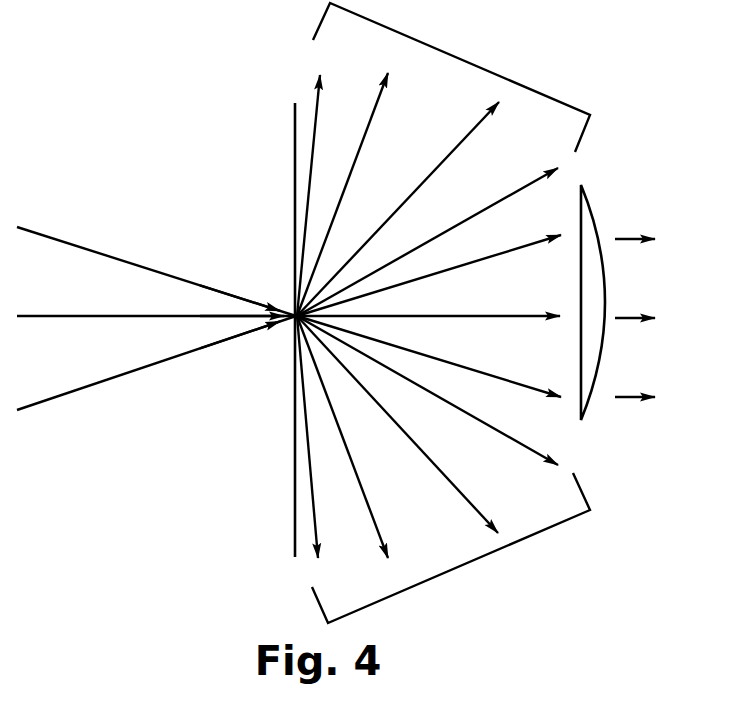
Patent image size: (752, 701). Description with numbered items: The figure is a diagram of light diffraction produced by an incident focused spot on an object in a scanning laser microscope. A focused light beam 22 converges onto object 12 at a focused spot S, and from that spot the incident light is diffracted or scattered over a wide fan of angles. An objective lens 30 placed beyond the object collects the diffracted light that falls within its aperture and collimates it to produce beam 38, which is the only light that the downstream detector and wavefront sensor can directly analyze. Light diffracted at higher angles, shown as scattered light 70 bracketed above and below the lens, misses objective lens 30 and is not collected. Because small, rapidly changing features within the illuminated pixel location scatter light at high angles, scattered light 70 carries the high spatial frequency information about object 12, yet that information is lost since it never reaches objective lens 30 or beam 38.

The object 12 is at (292, 474).
The focused light beam 22 is at (98, 252).
The focused spot S is at (293, 303).
The scattered light 70 is at (455, 57).
The objective lens 30 is at (587, 201).
The beam 38 is at (618, 402).